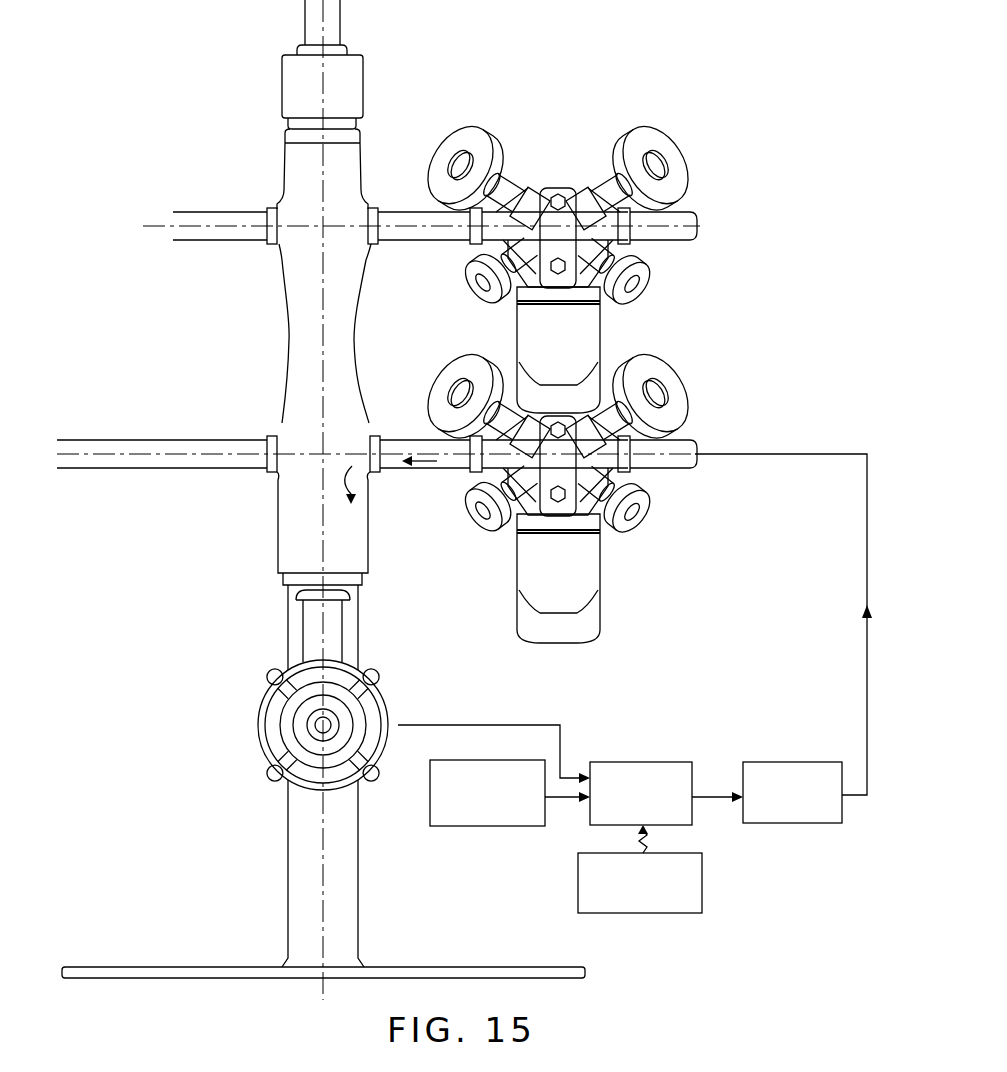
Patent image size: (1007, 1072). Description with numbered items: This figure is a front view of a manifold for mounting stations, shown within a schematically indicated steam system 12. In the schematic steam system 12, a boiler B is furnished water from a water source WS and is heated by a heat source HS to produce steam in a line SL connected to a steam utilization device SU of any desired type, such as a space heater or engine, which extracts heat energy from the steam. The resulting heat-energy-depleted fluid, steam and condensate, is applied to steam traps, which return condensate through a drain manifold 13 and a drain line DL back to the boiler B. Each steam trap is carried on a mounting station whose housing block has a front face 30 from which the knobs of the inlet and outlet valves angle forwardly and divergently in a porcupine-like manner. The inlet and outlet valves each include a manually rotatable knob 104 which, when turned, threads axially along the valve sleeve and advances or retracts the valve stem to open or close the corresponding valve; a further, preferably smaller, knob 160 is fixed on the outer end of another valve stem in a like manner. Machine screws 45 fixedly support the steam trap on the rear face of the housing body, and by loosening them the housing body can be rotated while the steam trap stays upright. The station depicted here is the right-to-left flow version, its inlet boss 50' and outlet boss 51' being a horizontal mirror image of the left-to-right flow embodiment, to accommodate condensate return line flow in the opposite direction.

The steam system 12 is at (780, 936).
The drain manifold 13 is at (256, 551).
The front face 30 is at (558, 466).
The machine screws 45 is at (561, 192).
The inlet boss 50' is at (659, 473).
The outlet boss 51' is at (469, 473).
The knob 104 is at (658, 411).
The knob 160 is at (647, 507).
The drain line DL is at (447, 725).
The boiler B is at (633, 762).
The water source WS is at (495, 826).
The condensate return line SL is at (715, 797).
The steam utilization device SU is at (818, 823).
The heat source HS is at (702, 880).